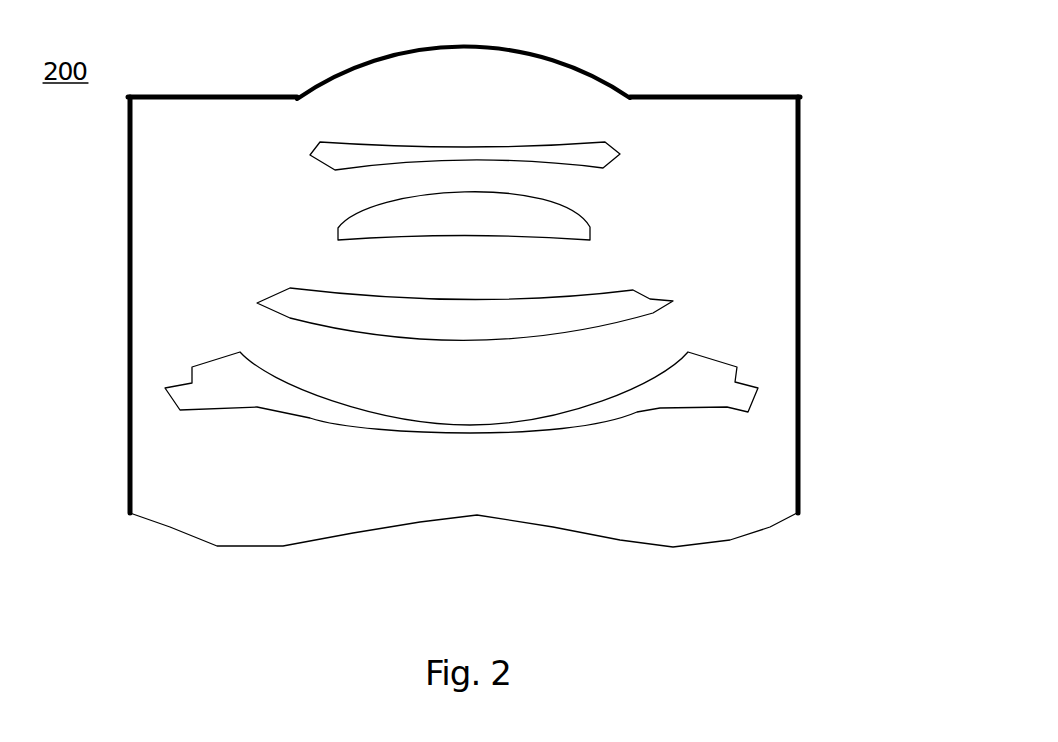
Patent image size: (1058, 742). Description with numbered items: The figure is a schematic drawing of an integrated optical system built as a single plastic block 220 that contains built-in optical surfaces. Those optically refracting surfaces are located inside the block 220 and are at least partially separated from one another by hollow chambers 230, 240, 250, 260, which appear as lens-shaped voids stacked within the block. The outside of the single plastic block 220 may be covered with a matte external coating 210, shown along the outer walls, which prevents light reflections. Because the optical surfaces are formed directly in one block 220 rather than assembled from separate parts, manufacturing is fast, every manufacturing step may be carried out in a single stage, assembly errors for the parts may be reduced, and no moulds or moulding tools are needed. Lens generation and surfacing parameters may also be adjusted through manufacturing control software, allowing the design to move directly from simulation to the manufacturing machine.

The matte external coating 210 is at (800, 272).
The single plastic block 220 is at (770, 123).
The hollow chamber 230 is at (625, 403).
The hollow chamber 240 is at (618, 305).
The hollow chamber 250 is at (560, 222).
The hollow chamber 260 is at (347, 158).